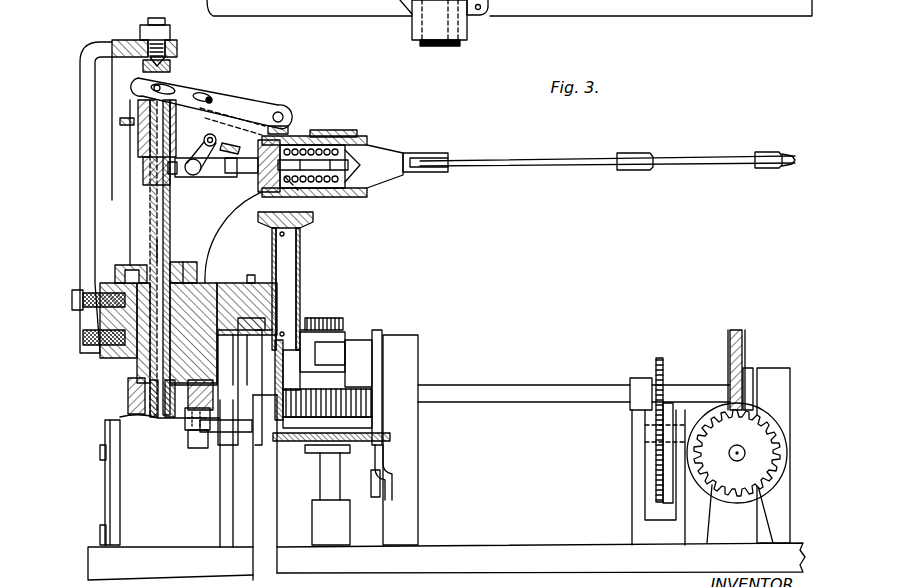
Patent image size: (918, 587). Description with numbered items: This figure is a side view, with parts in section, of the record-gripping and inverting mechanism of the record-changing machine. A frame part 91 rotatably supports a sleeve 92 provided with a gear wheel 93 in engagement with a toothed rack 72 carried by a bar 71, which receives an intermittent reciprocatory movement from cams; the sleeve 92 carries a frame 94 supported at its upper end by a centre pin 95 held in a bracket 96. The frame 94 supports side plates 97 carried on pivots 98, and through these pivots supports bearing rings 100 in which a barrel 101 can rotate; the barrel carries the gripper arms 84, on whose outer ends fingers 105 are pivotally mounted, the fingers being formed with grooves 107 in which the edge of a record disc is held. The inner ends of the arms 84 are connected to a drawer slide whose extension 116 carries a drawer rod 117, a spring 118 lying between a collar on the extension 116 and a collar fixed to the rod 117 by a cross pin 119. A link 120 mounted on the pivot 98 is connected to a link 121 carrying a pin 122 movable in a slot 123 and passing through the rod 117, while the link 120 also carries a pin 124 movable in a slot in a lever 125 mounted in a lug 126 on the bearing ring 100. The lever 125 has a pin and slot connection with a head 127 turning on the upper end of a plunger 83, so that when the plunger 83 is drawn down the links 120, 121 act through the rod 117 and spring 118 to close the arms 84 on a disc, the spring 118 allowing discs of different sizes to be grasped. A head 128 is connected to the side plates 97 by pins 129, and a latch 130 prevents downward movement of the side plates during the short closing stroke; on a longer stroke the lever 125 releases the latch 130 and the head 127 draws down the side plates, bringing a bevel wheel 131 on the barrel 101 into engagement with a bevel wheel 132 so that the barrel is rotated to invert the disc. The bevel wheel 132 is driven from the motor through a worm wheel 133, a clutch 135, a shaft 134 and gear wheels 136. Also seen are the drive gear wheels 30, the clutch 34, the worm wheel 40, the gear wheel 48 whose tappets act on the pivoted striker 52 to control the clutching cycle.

The gear wheels 30 is at (745, 431).
The clutch 34 is at (785, 461).
The worm wheel 40 is at (745, 350).
The gear wheel 48 is at (663, 482).
The striker 52 is at (668, 437).
The bar 71 is at (262, 397).
The toothed rack 72 is at (202, 433).
The plunger 83 is at (115, 281).
The gripper arms 84 is at (533, 160).
The frame part 91 is at (107, 357).
The sleeve 92 is at (143, 308).
The gear wheel 93 is at (123, 382).
The frame 94 is at (207, 253).
The centre pin 95 is at (158, 18).
The bracket 96 is at (84, 107).
The side plates 97 is at (172, 180).
The pivots 98 is at (298, 190).
The bearing rings 100 is at (315, 132).
The barrel 101 is at (355, 195).
The fingers 105 is at (790, 167).
The grooves 107 is at (640, 153).
The extension 116 is at (362, 180).
The drawer rod 117 is at (258, 186).
The spring 118 is at (315, 176).
The cross pin 119 is at (383, 140).
The link 120 is at (285, 110).
The link 121 is at (198, 115).
The pin 122 is at (158, 248).
The slot 123 is at (163, 187).
The pin 124 is at (213, 95).
The lever 125 is at (250, 110).
The lug 126 is at (283, 128).
The head 127 is at (150, 165).
The head 128 is at (157, 180).
The pins 129 is at (185, 100).
The latch 130 is at (120, 121).
The bevel wheel 131 is at (243, 180).
The bevel wheel 132 is at (297, 227).
The worm wheel 133 is at (387, 439).
The shaft 134 is at (348, 358).
The clutch 135 is at (357, 403).
The gear wheels 136 is at (342, 320).